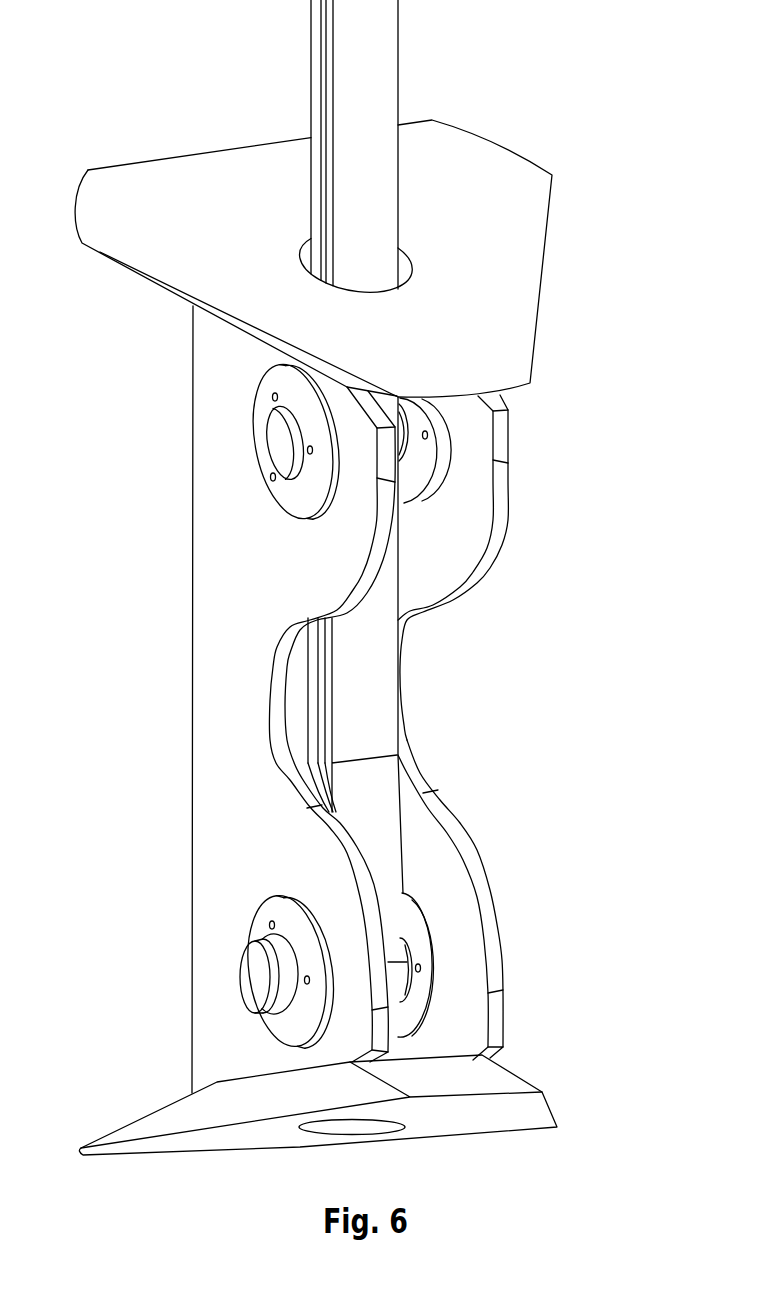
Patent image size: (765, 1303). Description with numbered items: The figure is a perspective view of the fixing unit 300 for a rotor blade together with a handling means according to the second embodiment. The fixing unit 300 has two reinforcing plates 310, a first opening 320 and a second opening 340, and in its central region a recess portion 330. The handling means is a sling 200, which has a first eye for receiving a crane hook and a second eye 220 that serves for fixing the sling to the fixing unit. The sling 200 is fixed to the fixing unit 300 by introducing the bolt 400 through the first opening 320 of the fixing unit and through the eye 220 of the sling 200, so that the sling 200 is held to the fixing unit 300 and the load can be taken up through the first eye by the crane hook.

The sling 200 is at (376, 127).
The second eye 220 is at (392, 893).
The fixing unit 300 is at (463, 525).
The reinforcing plates 310 is at (518, 265).
The first opening 320 is at (278, 918).
The recess portion 330 is at (273, 692).
The second opening 340 is at (273, 438).
The bolt 400 is at (255, 970).